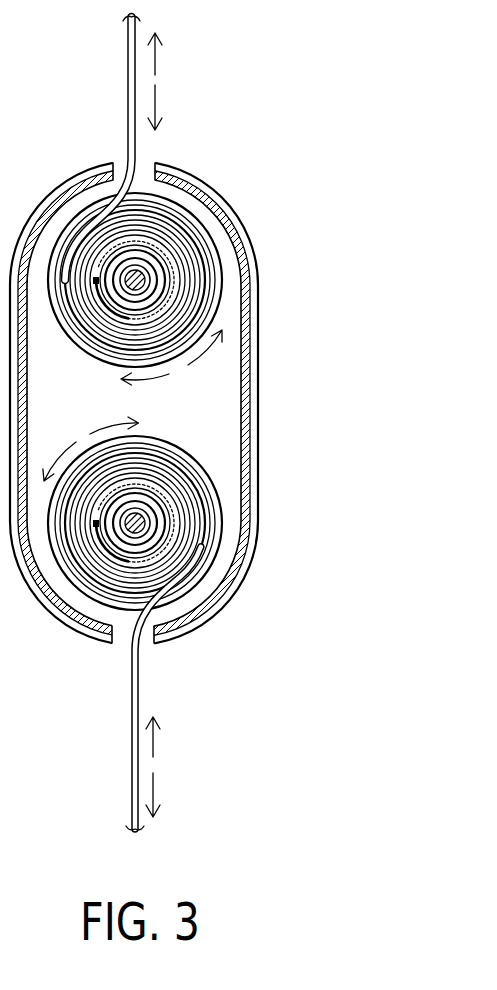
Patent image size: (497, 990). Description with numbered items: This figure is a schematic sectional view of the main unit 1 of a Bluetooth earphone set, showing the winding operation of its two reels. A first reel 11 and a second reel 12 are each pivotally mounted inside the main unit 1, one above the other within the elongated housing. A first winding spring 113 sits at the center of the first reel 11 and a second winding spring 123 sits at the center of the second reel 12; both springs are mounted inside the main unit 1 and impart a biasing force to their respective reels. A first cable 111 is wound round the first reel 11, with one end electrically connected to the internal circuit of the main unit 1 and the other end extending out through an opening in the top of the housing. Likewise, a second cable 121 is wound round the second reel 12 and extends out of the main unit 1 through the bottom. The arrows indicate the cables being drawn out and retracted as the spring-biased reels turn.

The main unit 1 is at (268, 368).
The first reel 11 is at (195, 222).
The first cable 111 is at (128, 74).
The first winding spring 113 is at (152, 274).
The second reel 12 is at (195, 467).
The second cable 121 is at (138, 688).
The second winding spring 123 is at (153, 515).